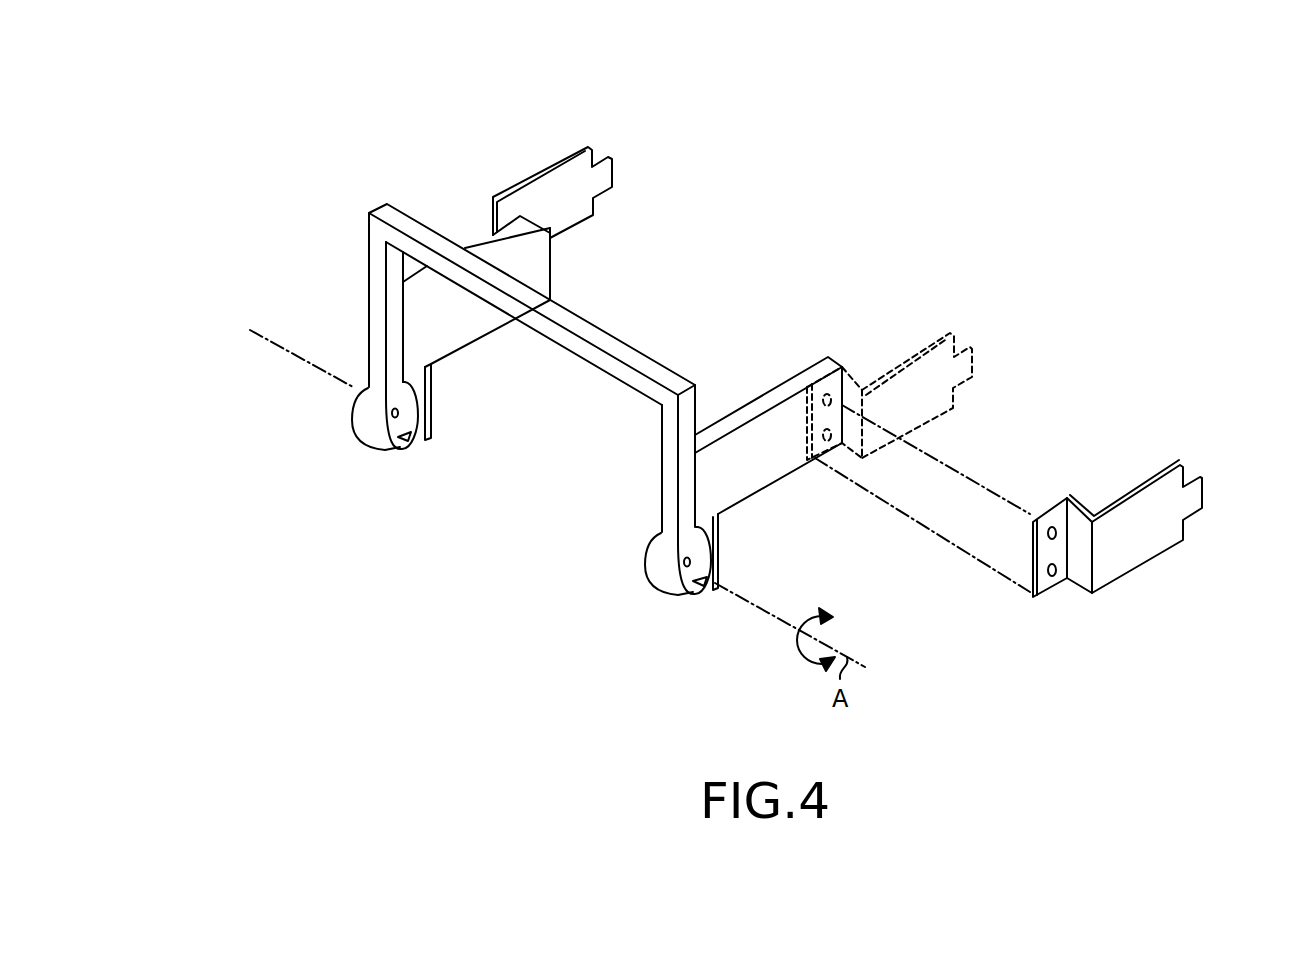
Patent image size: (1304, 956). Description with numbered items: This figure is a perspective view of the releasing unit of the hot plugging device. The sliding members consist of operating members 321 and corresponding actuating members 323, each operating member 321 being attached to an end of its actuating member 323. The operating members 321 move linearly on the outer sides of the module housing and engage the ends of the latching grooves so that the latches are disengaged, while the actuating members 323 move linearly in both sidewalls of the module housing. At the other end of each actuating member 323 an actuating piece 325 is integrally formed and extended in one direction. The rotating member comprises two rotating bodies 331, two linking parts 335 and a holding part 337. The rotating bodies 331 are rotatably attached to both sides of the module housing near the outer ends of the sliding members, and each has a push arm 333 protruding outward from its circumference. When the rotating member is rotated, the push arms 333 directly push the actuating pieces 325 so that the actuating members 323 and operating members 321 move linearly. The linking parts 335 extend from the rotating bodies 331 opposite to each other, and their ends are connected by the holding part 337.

The operating member 321 is at (565, 183).
The actuating member 323 is at (488, 235).
The actuating piece 325 is at (717, 542).
The rotating body 331 is at (368, 406).
The push arm 333 is at (407, 445).
The linking part 335 is at (377, 310).
The holding part 337 is at (417, 237).